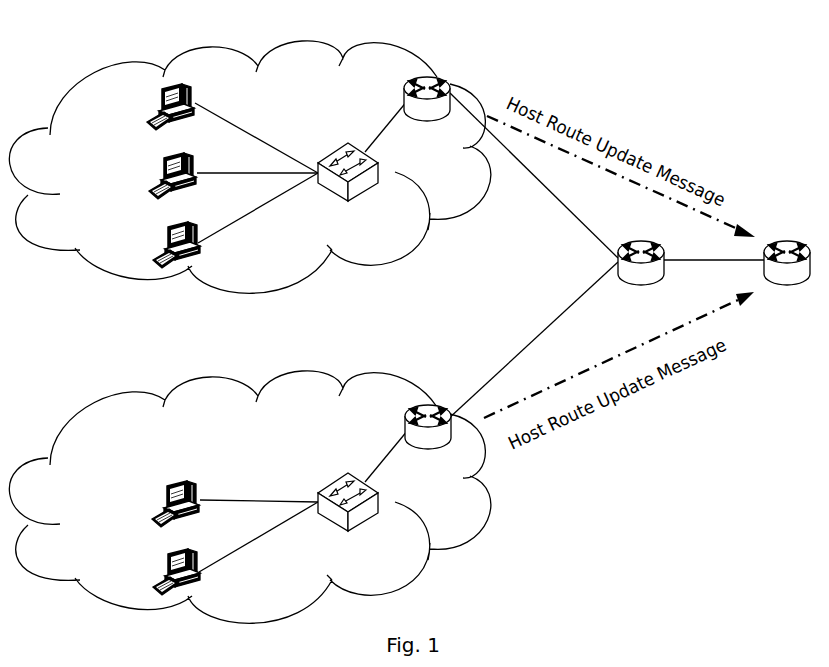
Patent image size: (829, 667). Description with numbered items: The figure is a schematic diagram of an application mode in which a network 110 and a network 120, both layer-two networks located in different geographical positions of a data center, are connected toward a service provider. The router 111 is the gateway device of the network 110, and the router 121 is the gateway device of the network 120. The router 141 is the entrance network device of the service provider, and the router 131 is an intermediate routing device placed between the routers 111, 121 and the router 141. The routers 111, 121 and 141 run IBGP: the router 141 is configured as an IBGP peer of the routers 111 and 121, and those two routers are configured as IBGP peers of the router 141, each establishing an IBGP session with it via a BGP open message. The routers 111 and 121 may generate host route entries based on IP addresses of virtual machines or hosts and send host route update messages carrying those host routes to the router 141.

The network 110 is at (249, 152).
The network 120 is at (249, 483).
The router 111 is at (440, 80).
The router 121 is at (432, 405).
The router 131 is at (642, 242).
The router 141 is at (782, 242).